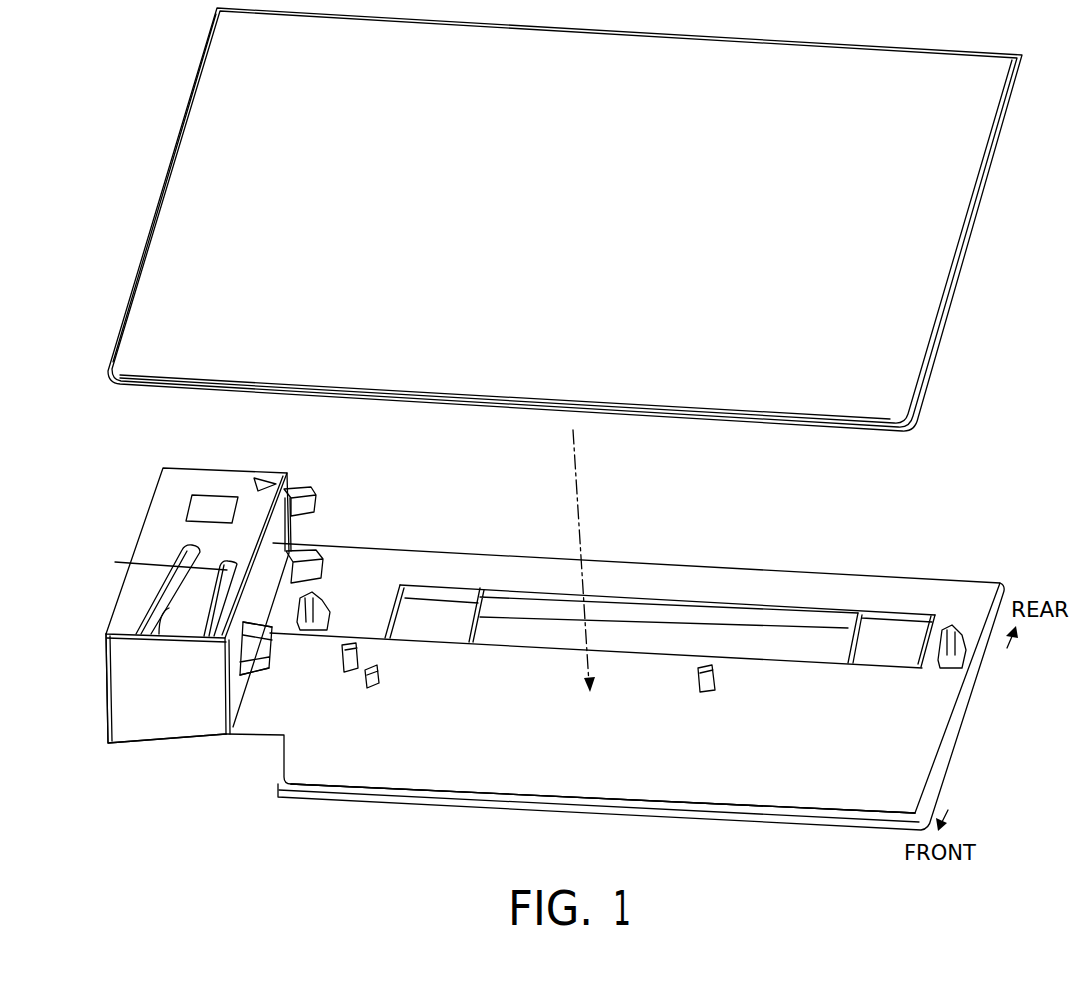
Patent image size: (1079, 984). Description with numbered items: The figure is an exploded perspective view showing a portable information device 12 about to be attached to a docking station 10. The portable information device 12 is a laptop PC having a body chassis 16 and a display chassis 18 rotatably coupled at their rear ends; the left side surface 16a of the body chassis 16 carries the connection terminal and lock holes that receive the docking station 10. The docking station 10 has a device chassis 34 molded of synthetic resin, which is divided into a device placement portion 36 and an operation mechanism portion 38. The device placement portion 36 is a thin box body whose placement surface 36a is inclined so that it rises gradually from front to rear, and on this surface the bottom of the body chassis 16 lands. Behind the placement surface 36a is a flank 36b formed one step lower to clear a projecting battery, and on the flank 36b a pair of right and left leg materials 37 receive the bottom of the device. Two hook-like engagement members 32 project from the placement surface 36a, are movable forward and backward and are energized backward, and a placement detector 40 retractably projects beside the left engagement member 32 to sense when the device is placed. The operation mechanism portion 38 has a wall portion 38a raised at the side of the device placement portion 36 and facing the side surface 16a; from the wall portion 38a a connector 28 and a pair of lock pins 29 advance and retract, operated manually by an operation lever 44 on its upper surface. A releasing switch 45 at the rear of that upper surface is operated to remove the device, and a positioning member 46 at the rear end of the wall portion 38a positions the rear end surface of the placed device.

The docking station 10 is at (120, 468).
The portable information device 12 is at (176, 98).
The body chassis 16 is at (942, 338).
The side surface 16a is at (150, 210).
The display chassis 18 is at (920, 293).
The connector 28 is at (262, 653).
The lock pins 29 is at (270, 632).
The engagement members 32 is at (351, 645).
The device chassis 34 is at (187, 843).
The device placement portion 36 is at (304, 774).
The placement surface 36a is at (605, 797).
The flank 36b is at (775, 576).
The leg materials 37 is at (315, 605).
The operation mechanism portion 38 is at (173, 676).
The wall portion 38a is at (287, 549).
The placement detector 40 is at (372, 690).
The operation lever 44 is at (175, 572).
The releasing switch 45 is at (207, 512).
The positioning member 46 is at (291, 488).